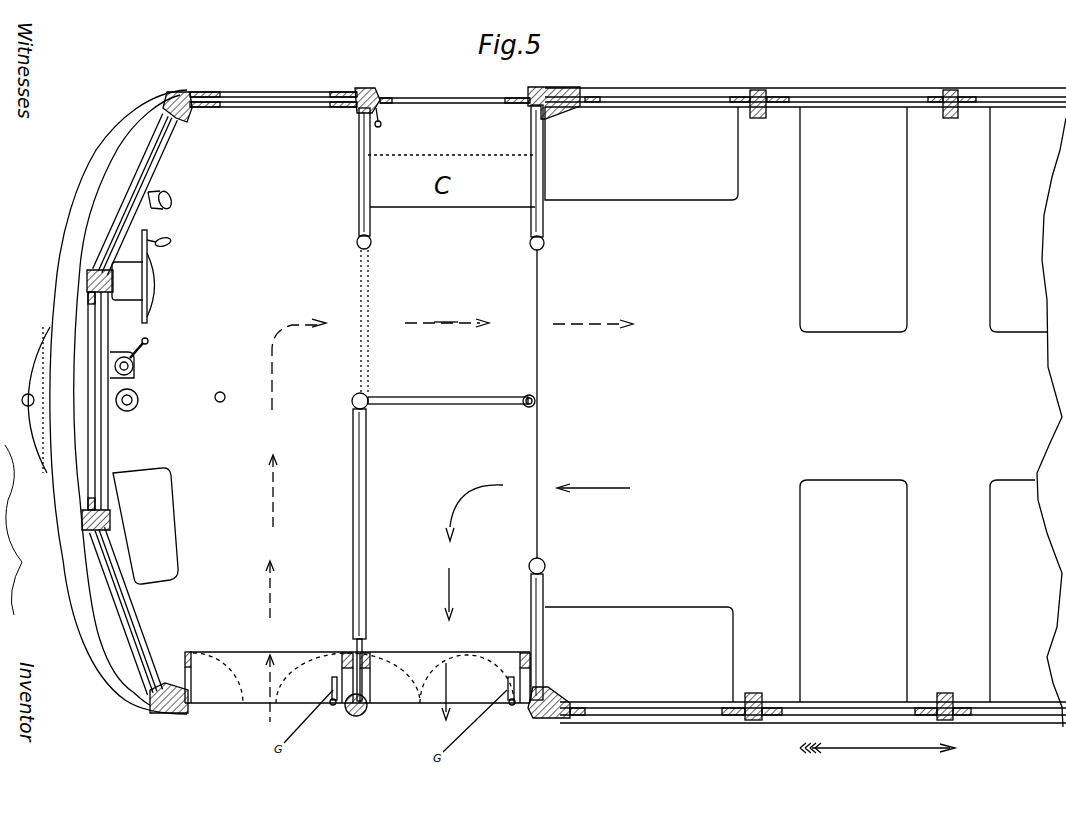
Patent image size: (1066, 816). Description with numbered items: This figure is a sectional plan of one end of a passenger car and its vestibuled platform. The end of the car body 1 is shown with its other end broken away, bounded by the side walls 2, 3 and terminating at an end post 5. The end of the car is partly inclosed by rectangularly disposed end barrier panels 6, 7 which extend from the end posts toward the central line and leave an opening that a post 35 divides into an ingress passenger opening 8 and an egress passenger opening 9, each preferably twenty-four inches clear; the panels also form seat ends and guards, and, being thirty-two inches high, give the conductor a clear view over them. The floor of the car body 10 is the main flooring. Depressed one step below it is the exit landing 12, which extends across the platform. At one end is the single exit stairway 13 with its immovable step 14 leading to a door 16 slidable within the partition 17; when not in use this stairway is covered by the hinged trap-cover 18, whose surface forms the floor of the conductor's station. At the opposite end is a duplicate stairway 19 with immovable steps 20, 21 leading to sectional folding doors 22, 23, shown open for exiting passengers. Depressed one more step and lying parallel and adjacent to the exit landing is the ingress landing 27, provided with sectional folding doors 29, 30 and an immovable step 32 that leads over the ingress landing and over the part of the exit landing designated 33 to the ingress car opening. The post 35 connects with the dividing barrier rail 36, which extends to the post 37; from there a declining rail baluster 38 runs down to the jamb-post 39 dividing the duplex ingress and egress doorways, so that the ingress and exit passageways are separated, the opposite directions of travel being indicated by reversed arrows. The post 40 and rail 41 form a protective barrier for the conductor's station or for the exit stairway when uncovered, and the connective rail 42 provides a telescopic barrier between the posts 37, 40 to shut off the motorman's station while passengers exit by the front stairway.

The car body 1 is at (1017, 468).
The side wall 2 is at (847, 95).
The side wall 3 is at (742, 720).
The end post 5 is at (553, 718).
The end barrier panel 6 is at (540, 220).
The end barrier panel 7 is at (535, 593).
The ingress passenger opening 8 is at (585, 404).
The egress passenger opening 9 is at (585, 495).
The floor of the car body 10 is at (674, 488).
The exit landing 12 is at (467, 513).
The exit stairway 13 is at (397, 127).
The immovable step 14 is at (560, 93).
The door 16 is at (470, 100).
The partition 17 is at (258, 92).
The hinged trap-cover 18 is at (451, 144).
The stairway 19 is at (527, 700).
The immovable step 20 is at (442, 605).
The immovable step 21 is at (442, 691).
The sectional folding door 22 is at (516, 705).
The sectional folding door 23 is at (367, 685).
The ingress landing 27 is at (235, 465).
The sectional folding door 29 is at (347, 703).
The sectional folding door 30 is at (200, 707).
The immovable step 32 is at (265, 588).
The part of the exit landing 33 is at (380, 357).
The post 35 is at (536, 402).
The dividing barrier rail 36 is at (412, 400).
The post 37 is at (353, 405).
The declining rail baluster 38 is at (362, 525).
The jamb-post 39 is at (358, 720).
The post 40 is at (359, 244).
The rail 41 is at (367, 168).
The connective rail 42 is at (368, 320).